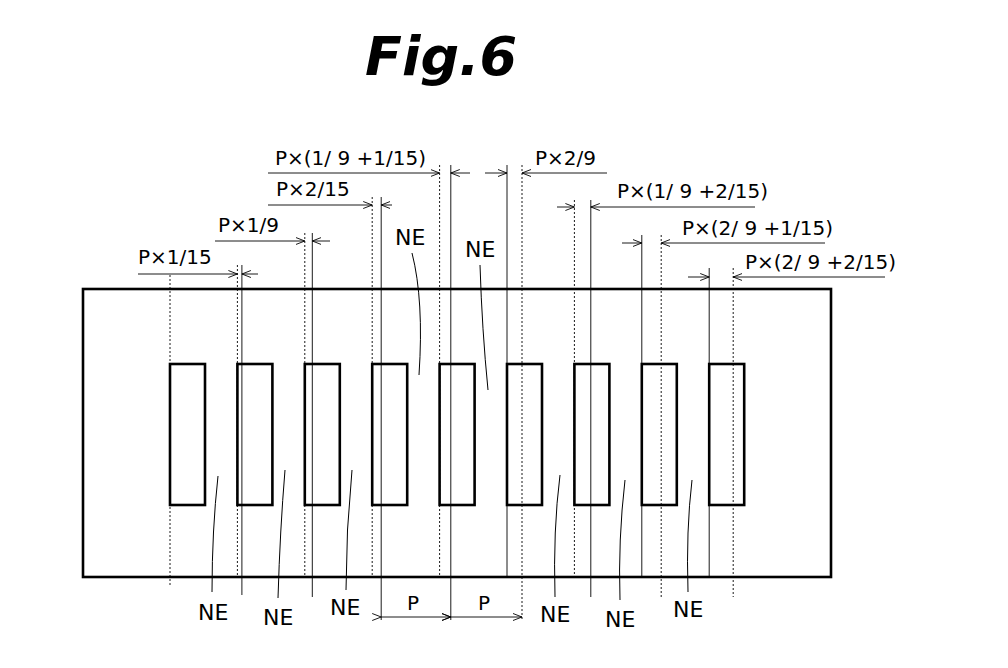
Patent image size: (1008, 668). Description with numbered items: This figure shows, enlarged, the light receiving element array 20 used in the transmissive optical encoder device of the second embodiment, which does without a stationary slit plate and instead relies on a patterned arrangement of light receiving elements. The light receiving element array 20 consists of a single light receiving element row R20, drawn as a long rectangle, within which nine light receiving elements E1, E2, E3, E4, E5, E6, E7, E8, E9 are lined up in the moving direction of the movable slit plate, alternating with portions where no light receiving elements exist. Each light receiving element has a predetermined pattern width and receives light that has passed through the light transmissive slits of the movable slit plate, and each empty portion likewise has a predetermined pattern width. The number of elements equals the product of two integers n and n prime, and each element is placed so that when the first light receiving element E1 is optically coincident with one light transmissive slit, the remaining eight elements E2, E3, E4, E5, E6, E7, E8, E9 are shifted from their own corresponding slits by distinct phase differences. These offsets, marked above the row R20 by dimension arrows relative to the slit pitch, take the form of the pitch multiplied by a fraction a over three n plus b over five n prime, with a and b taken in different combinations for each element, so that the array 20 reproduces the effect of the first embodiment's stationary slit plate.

The light receiving element array 20 is at (836, 317).
The light receiving element row R20 is at (748, 487).
The light receiving element E1 is at (178, 488).
The light receiving element E2 is at (240, 465).
The light receiving element E3 is at (305, 435).
The light receiving element E4 is at (375, 407).
The light receiving element E5 is at (445, 378).
The light receiving element E6 is at (540, 455).
The light receiving element E7 is at (610, 430).
The light receiving element E8 is at (672, 399).
The light receiving element E9 is at (737, 372).